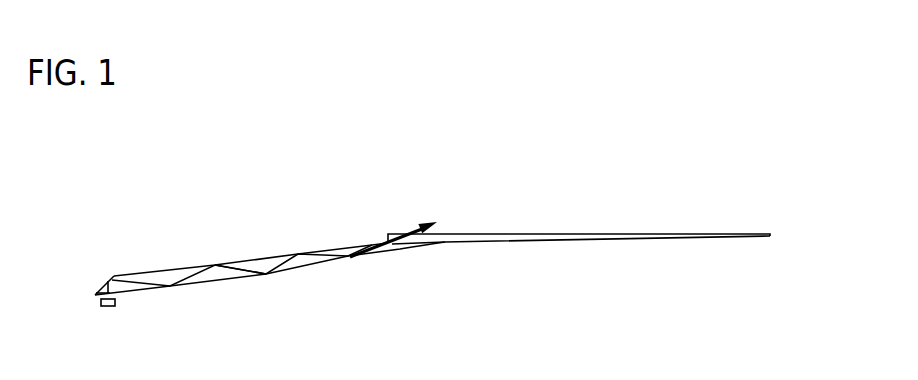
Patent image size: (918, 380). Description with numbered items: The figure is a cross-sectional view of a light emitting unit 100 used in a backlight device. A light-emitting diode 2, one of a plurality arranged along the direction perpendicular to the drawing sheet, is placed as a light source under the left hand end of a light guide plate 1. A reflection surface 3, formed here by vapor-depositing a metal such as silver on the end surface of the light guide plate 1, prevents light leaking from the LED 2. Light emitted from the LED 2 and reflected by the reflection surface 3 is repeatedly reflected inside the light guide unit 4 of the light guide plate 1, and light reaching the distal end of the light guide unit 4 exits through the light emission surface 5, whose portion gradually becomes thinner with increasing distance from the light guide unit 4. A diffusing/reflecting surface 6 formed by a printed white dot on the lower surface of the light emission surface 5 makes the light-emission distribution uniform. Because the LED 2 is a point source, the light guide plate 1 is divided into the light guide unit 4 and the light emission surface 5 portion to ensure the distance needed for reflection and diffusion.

The light emitting unit 100 is at (228, 200).
The light guide plate 1 is at (263, 259).
The light-emitting diode 2 is at (115, 303).
The reflection surface 3 is at (98, 290).
The light guide unit 4 is at (222, 270).
The light emission surface 5 is at (560, 232).
The diffusing/reflecting surface 6 is at (595, 243).